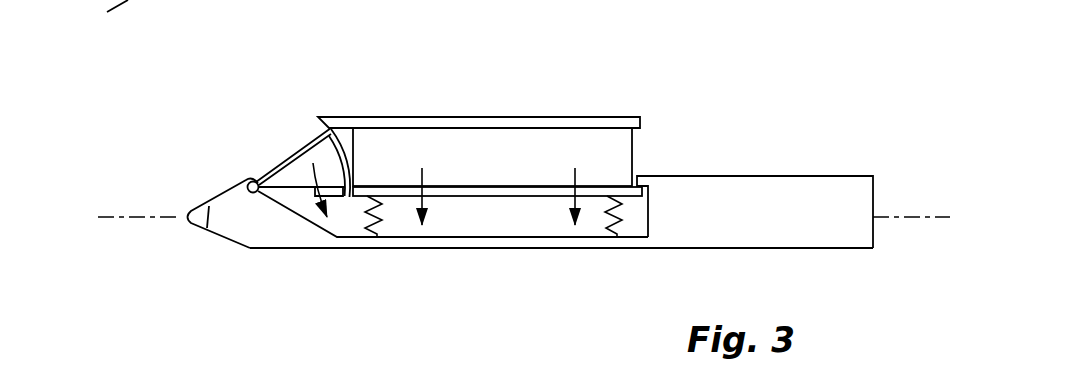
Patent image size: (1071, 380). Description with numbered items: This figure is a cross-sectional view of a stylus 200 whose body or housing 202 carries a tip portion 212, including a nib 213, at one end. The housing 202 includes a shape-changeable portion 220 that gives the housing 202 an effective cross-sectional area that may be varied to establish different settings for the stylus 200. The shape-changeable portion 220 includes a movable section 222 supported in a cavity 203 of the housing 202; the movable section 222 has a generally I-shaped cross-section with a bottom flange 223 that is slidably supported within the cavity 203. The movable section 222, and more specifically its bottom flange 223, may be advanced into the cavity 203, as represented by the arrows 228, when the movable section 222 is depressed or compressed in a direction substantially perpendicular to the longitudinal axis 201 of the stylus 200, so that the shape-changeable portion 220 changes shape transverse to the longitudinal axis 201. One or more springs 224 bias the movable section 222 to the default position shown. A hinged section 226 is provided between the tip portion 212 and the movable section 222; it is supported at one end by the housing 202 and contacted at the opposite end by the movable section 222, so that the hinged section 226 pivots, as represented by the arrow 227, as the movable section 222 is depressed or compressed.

The stylus 200 is at (312, 78).
The longitudinal axis 201 is at (938, 213).
The housing 202 is at (597, 92).
The cavity 203 is at (442, 220).
The tip portion 212 is at (213, 187).
The nib 213 is at (200, 217).
The shape-changeable portion 220 is at (435, 102).
The movable section 222 is at (512, 123).
The bottom flange 223 is at (525, 192).
The spring 224 is at (370, 212).
The hinged section 226 is at (297, 157).
The arrow 227 is at (323, 177).
The arrows 228 is at (498, 184).